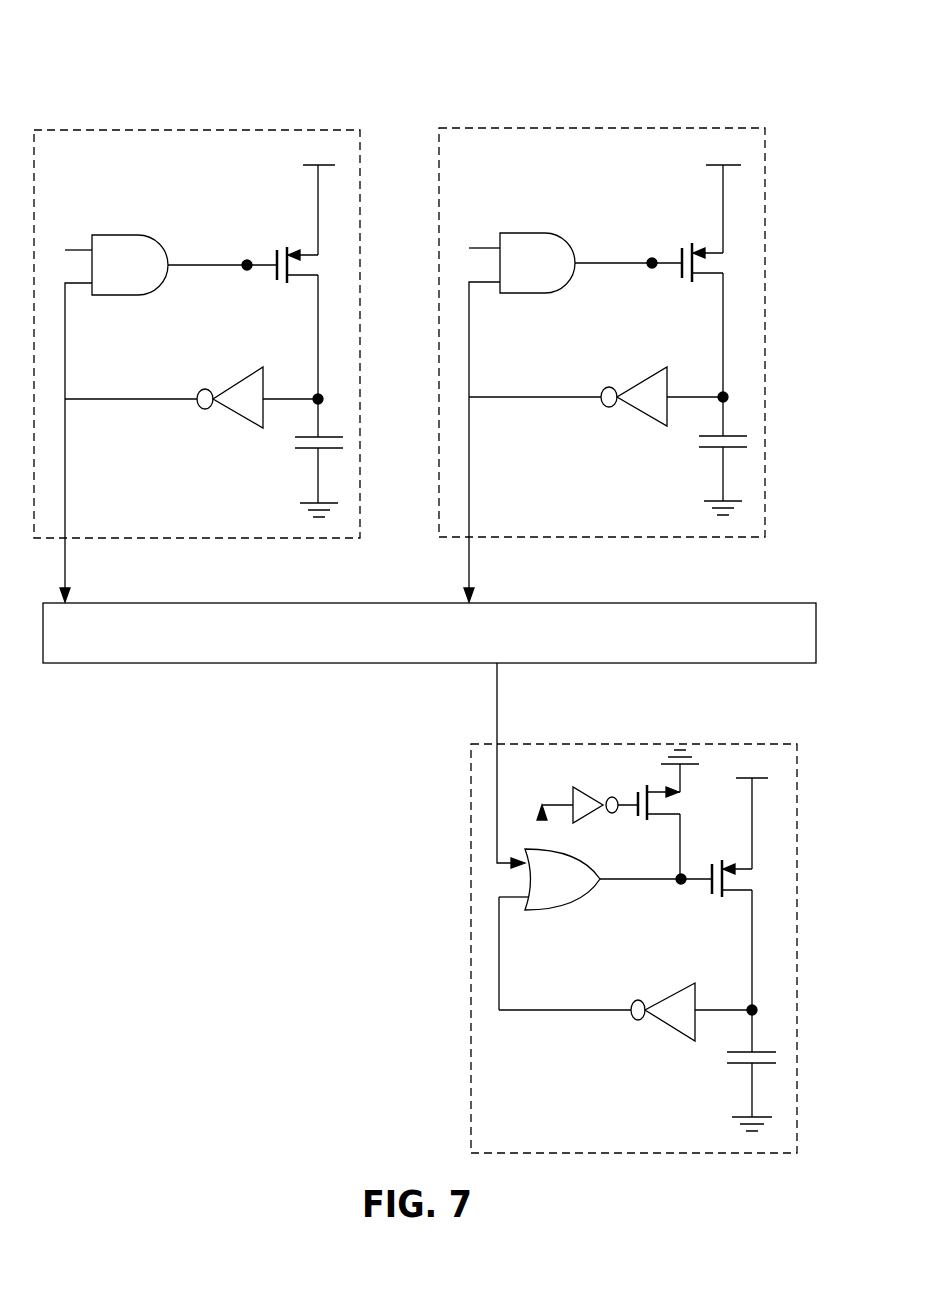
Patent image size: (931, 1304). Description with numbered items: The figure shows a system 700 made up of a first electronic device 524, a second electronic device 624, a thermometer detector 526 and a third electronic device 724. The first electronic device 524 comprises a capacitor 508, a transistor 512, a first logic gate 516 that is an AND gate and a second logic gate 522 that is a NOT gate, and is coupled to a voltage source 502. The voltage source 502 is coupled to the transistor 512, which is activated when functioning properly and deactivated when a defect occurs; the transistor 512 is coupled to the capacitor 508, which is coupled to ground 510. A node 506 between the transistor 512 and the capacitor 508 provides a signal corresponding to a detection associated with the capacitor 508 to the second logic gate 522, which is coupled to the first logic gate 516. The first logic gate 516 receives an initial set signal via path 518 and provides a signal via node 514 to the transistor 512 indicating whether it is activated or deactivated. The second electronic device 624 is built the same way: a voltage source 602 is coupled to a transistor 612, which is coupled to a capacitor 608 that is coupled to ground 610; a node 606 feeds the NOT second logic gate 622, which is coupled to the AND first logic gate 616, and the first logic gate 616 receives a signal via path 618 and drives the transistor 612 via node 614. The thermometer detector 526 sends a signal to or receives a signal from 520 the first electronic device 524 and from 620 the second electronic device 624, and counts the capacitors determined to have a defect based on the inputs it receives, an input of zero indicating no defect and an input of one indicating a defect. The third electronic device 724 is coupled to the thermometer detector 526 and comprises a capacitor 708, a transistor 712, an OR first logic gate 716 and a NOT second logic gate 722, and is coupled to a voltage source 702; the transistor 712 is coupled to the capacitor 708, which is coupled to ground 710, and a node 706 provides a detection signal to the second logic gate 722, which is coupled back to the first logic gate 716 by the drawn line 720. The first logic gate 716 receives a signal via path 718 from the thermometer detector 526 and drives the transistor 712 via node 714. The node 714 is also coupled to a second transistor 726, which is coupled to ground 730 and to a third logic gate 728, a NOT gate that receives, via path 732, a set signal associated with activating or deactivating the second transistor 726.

The system 700 is at (180, 54).
The second electronic device 624 is at (175, 129).
The voltage source 602 is at (332, 142).
The first logic gate 616 is at (143, 235).
The path 618 is at (81, 247).
The node 614 is at (247, 258).
The transistor 612 is at (283, 278).
The signal path of second electronic device 620 is at (65, 363).
The node 606 is at (324, 390).
The capacitor 608 is at (340, 436).
The ground 610 is at (332, 500).
The second logic gate 622 is at (233, 412).
The first electronic device 524 is at (597, 128).
The voltage source 502 is at (735, 142).
The first logic gate 516 is at (548, 233).
The path 518 is at (480, 246).
The node 514 is at (652, 256).
The transistor 512 is at (688, 277).
The signal path of first electronic device 520 is at (469, 338).
The node 506 is at (728, 390).
The capacitor 508 is at (744, 436).
The ground 510 is at (736, 500).
The second logic gate 522 is at (638, 412).
The thermometer detector 526 is at (343, 664).
The path 718 is at (497, 722).
The third electronic device 724 is at (567, 744).
The voltage source 702 is at (758, 758).
The ground 730 is at (683, 748).
The second transistor 726 is at (647, 786).
The third logic gate 728 is at (573, 788).
The path 732 is at (543, 818).
The first logic gate 716 is at (528, 906).
The node 714 is at (677, 876).
The transistor 712 is at (719, 895).
The feedback line 720 is at (498, 1003).
The second logic gate 722 is at (677, 1034).
The node 706 is at (755, 1003).
The capacitor 708 is at (760, 1052).
The ground 710 is at (763, 1116).